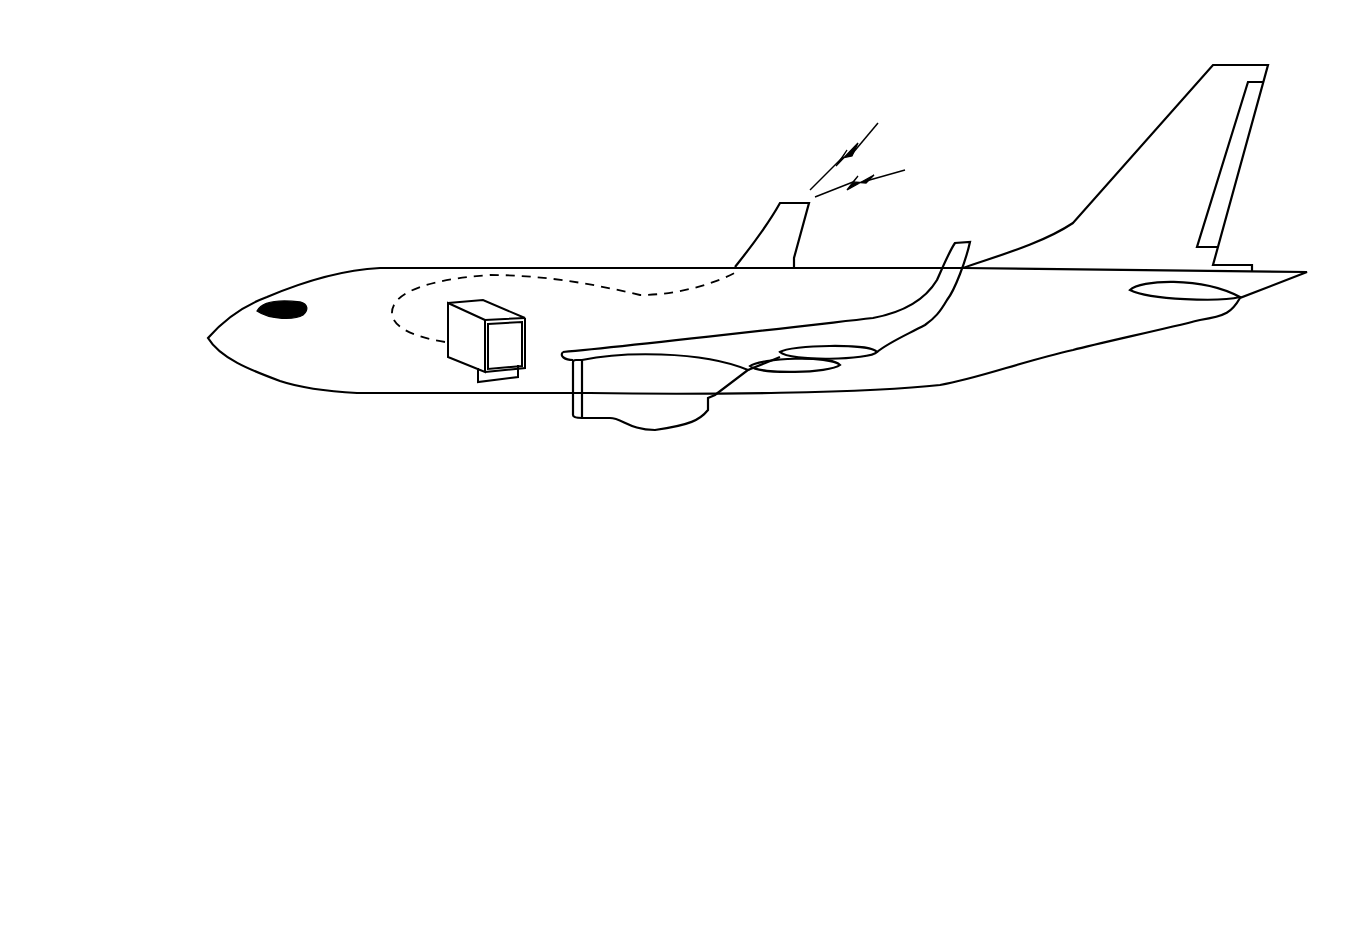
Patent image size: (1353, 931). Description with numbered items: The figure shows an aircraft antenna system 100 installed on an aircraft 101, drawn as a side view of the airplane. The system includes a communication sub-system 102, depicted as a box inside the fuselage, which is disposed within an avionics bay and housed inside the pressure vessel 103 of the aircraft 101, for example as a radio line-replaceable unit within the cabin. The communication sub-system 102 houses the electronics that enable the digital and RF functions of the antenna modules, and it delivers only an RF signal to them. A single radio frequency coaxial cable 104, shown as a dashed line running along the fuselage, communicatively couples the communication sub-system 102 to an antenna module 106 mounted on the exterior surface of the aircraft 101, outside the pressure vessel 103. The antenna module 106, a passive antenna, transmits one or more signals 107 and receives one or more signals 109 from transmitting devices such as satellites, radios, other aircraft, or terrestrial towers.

The aircraft antenna system 100 is at (223, 167).
The aircraft 101 is at (178, 313).
The communication sub-system 102 is at (490, 382).
The pressure vessel 103 is at (335, 273).
The coaxial cable 104 is at (547, 282).
The antenna module 106 is at (757, 237).
The transmitted signal 107 is at (857, 145).
The received signal 109 is at (878, 183).